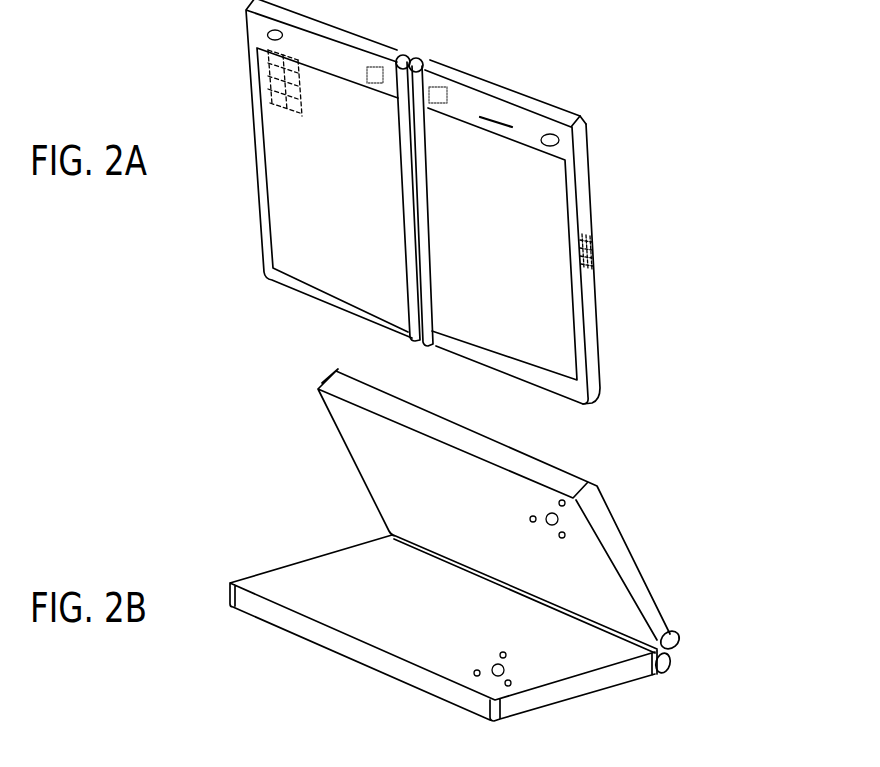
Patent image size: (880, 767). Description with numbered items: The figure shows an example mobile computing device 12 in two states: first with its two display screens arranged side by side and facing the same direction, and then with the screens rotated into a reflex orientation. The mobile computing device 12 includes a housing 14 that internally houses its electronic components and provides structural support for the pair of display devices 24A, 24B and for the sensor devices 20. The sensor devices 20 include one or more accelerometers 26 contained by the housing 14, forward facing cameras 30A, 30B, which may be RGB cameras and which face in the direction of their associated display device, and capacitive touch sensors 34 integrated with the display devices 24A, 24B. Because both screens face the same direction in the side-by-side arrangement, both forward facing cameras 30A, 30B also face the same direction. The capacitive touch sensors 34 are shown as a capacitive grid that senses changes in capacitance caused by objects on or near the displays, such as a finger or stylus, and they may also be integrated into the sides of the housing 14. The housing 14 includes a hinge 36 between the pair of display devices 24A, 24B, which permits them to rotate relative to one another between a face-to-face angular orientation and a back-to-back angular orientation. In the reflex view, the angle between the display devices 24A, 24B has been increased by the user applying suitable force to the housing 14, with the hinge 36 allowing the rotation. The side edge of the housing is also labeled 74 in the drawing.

The mobile computing device 12 is at (454, 202).
The housing 14 is at (488, 86).
The sensor devices 20 is at (390, 88).
The forward facing camera 30A is at (549, 134).
The forward facing camera 30B is at (268, 36).
The display device 24A is at (539, 222).
The display device 24B is at (357, 284).
The accelerometer 26 is at (437, 87).
The capacitive touch sensor 34 is at (270, 90).
The hinge 36 is at (416, 203).
The side edge of housing 74 is at (583, 203).